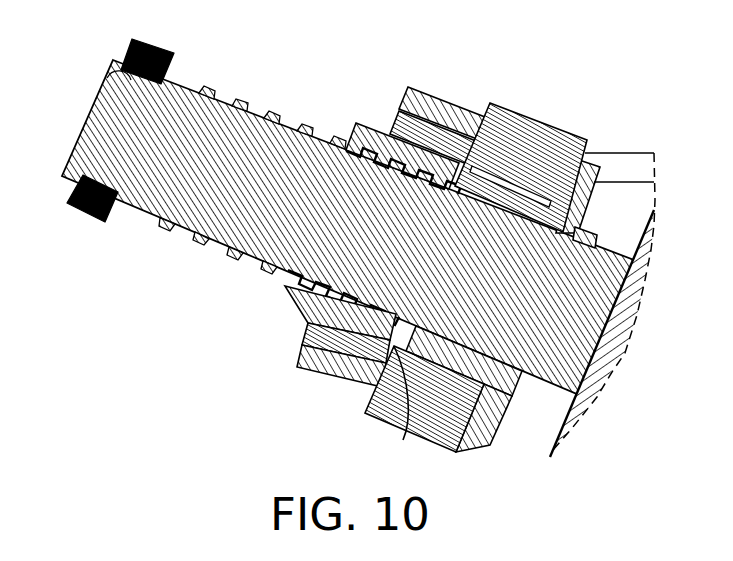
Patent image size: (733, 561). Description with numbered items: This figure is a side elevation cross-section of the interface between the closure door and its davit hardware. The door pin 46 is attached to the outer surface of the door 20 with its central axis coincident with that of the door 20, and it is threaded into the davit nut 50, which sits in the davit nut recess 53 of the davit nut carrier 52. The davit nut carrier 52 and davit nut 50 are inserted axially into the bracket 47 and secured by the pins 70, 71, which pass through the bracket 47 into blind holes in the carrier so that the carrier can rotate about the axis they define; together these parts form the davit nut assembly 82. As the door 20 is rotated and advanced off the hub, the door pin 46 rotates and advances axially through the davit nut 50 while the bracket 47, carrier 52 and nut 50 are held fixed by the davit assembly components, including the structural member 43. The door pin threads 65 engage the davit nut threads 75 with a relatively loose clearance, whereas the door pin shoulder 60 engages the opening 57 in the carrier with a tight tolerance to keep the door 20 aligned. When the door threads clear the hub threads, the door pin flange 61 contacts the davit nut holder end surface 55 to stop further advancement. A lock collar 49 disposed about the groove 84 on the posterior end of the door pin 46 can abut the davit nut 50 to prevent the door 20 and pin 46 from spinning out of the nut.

The door 20 is at (640, 263).
The structural member 43 is at (629, 164).
The door pin 46 is at (95, 108).
The bracket 47 is at (455, 108).
The lock collar 49 is at (160, 56).
The davit nut 50 is at (347, 147).
The davit nut carrier 52 is at (437, 104).
The davit nut recess 53 is at (357, 125).
The davit nut holder end surface 55 is at (587, 202).
The opening 57 is at (410, 397).
The door pin shoulder 60 is at (505, 385).
The door pin flange 61 is at (578, 237).
The door pin threads 65 is at (228, 97).
The pin 70 is at (380, 413).
The pin 71 is at (508, 112).
The davit nut threads 75 is at (285, 304).
The davit nut assembly 82 is at (550, 57).
The groove 84 is at (110, 80).